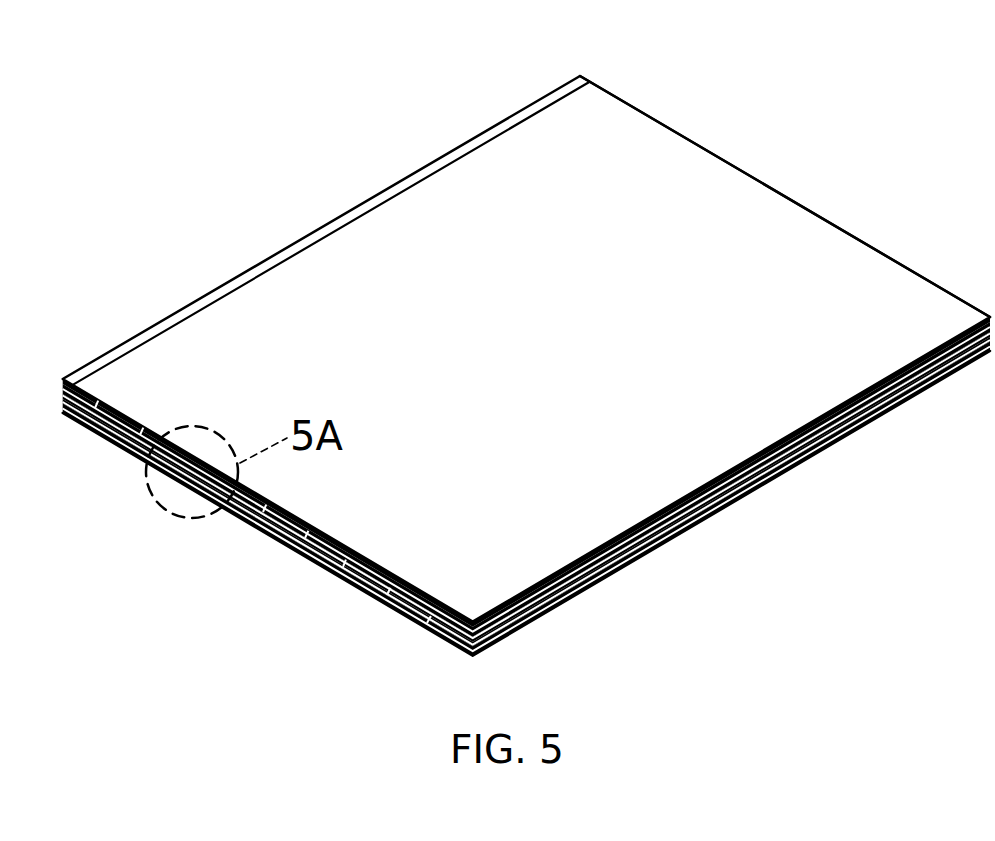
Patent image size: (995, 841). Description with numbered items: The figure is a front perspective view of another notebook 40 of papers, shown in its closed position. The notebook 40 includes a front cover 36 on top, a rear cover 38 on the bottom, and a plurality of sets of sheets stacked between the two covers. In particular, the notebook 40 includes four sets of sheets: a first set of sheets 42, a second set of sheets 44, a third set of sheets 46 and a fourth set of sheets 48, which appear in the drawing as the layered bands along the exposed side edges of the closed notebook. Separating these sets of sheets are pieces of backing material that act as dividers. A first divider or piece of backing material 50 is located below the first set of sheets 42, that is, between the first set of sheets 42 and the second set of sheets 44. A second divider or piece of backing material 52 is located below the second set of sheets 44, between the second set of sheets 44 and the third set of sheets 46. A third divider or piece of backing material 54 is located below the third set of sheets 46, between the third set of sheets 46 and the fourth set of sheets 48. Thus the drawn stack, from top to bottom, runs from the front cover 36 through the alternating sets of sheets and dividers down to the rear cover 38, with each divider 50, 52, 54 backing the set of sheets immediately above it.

The notebook 40 is at (526, 321).
The front cover 36 is at (852, 240).
The rear cover 38 is at (505, 636).
The first set of sheets 42 is at (95, 408).
The second set of sheets 44 is at (263, 512).
The third set of sheets 46 is at (343, 567).
The fourth set of sheets 48 is at (427, 623).
The first divider or piece of backing material 50 is at (140, 435).
The second divider or piece of backing material 52 is at (305, 538).
The third divider or piece of backing material 54 is at (387, 595).